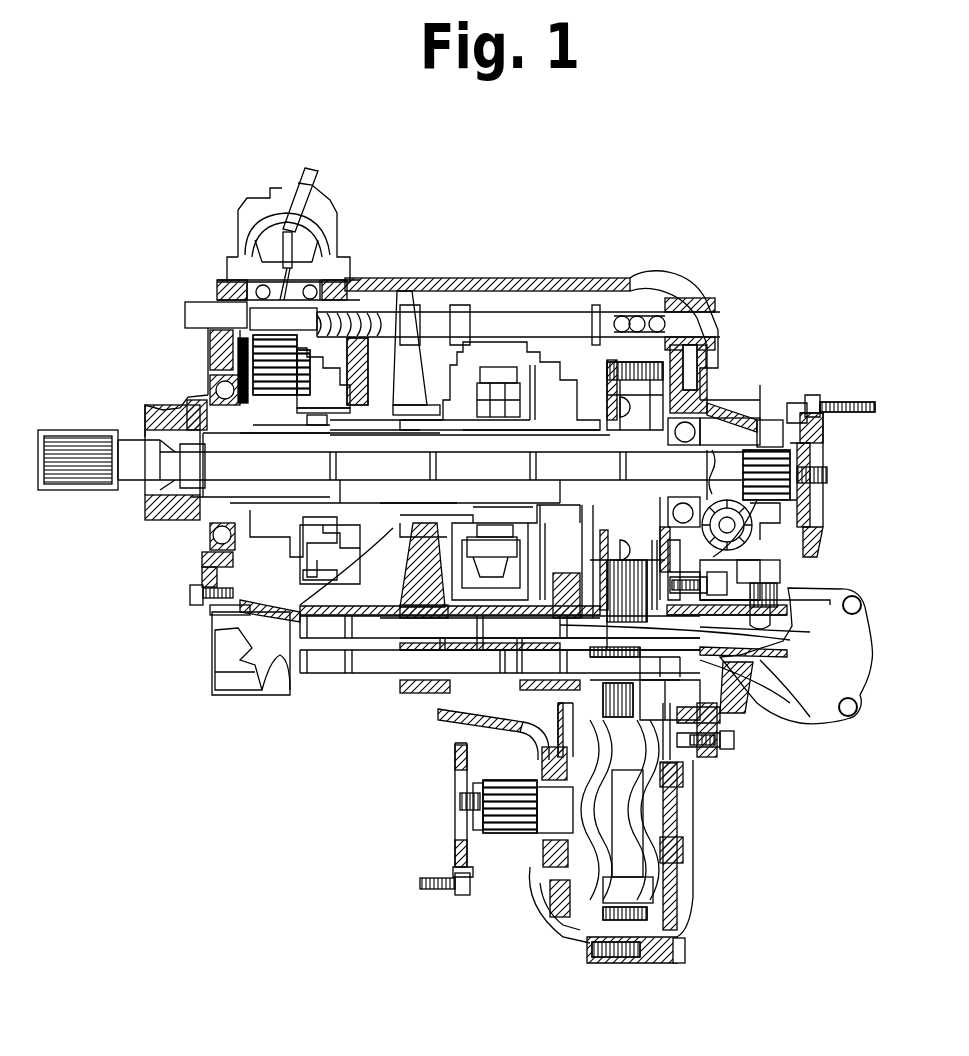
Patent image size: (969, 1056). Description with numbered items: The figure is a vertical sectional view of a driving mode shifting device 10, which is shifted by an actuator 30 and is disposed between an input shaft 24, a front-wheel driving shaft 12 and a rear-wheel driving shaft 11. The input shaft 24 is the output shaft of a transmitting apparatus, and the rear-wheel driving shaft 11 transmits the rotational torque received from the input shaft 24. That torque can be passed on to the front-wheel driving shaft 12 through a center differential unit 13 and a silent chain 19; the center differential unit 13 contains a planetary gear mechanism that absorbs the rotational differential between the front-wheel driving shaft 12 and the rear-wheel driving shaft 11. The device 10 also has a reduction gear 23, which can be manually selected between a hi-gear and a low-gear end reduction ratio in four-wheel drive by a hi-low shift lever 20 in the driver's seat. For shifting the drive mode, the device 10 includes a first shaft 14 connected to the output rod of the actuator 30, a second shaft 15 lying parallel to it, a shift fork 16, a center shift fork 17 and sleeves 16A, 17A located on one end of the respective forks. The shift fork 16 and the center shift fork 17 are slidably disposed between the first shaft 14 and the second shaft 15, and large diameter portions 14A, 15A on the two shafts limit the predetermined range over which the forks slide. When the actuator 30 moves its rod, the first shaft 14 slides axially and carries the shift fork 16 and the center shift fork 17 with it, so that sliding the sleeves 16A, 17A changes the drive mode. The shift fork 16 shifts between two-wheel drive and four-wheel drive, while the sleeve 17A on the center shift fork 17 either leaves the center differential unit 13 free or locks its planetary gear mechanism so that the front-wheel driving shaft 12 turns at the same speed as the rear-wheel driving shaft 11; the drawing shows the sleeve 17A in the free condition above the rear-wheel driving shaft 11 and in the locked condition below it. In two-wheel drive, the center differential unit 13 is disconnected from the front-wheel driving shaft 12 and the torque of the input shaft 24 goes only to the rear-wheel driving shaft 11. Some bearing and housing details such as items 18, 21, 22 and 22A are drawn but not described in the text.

The driving mode shifting device 10 is at (716, 276).
The rear-wheel driving shaft 11 is at (730, 457).
The front-wheel driving shaft 12 is at (473, 862).
The center differential unit 13 is at (497, 342).
The first shaft 14 is at (395, 688).
The large diameter portions 14A is at (445, 640).
The second shaft 15 is at (368, 660).
The large diameter portions 15A is at (480, 625).
The shift fork 16 is at (775, 700).
The sleeve 16A is at (560, 363).
The center shift fork 17 is at (410, 590).
The sleeve 17A is at (405, 405).
The bearing 18 is at (705, 392).
The silent chain 19 is at (707, 700).
The hi-low shift lever 20 is at (302, 178).
The shift rail 21 is at (545, 318).
The shift gear 22 is at (345, 330).
The shift gear portion 22A is at (417, 582).
The reduction gear 23 is at (205, 568).
The input shaft 24 is at (137, 487).
The actuator 30 is at (833, 610).